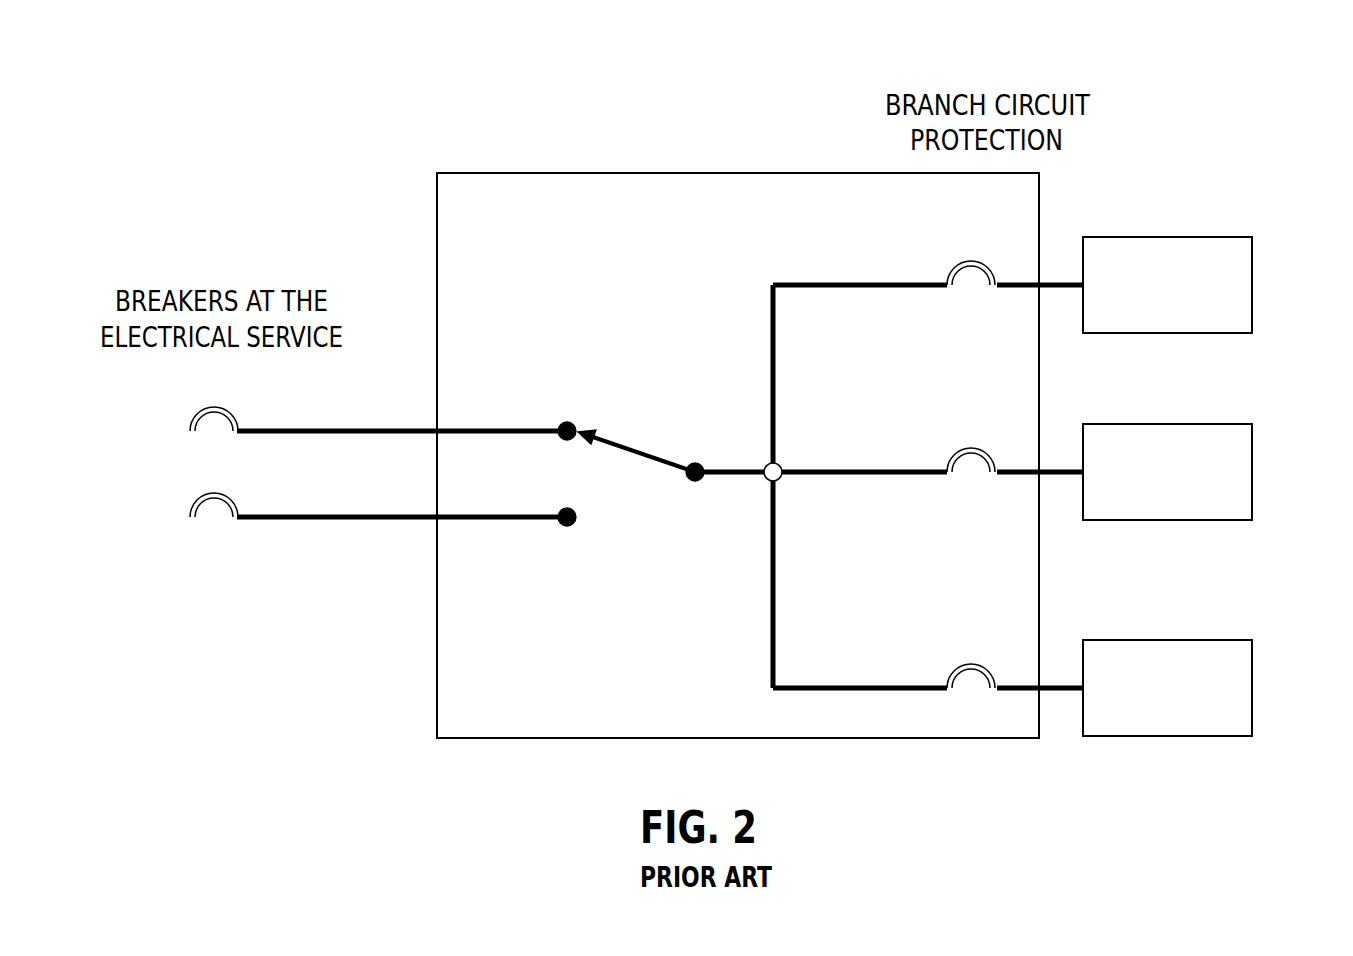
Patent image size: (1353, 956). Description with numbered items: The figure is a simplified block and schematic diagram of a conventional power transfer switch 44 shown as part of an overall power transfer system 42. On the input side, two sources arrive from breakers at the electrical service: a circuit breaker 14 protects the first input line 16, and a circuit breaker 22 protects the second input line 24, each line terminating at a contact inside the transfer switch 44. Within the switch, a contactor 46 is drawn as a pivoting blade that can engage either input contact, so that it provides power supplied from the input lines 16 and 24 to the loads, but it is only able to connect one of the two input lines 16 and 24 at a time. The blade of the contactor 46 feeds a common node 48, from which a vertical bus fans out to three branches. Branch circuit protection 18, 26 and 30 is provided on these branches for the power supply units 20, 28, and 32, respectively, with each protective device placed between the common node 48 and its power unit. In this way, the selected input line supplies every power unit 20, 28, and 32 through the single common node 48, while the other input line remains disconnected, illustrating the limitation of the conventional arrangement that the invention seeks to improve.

The circuit breaker 14 is at (213, 407).
The input line 16 is at (322, 433).
The branch circuit protection 18 is at (972, 261).
The power supply unit 20 is at (1252, 285).
The circuit breaker 22 is at (213, 493).
The input line 24 is at (322, 519).
The branch circuit protection 26 is at (972, 448).
The power supply unit 28 is at (1252, 472).
The branch circuit protection 30 is at (972, 664).
The power supply unit 32 is at (1252, 688).
The power transfer system 42 is at (1208, 94).
The power transfer switch 44 is at (627, 173).
The contactor 46 is at (650, 457).
The common node 48 is at (781, 466).